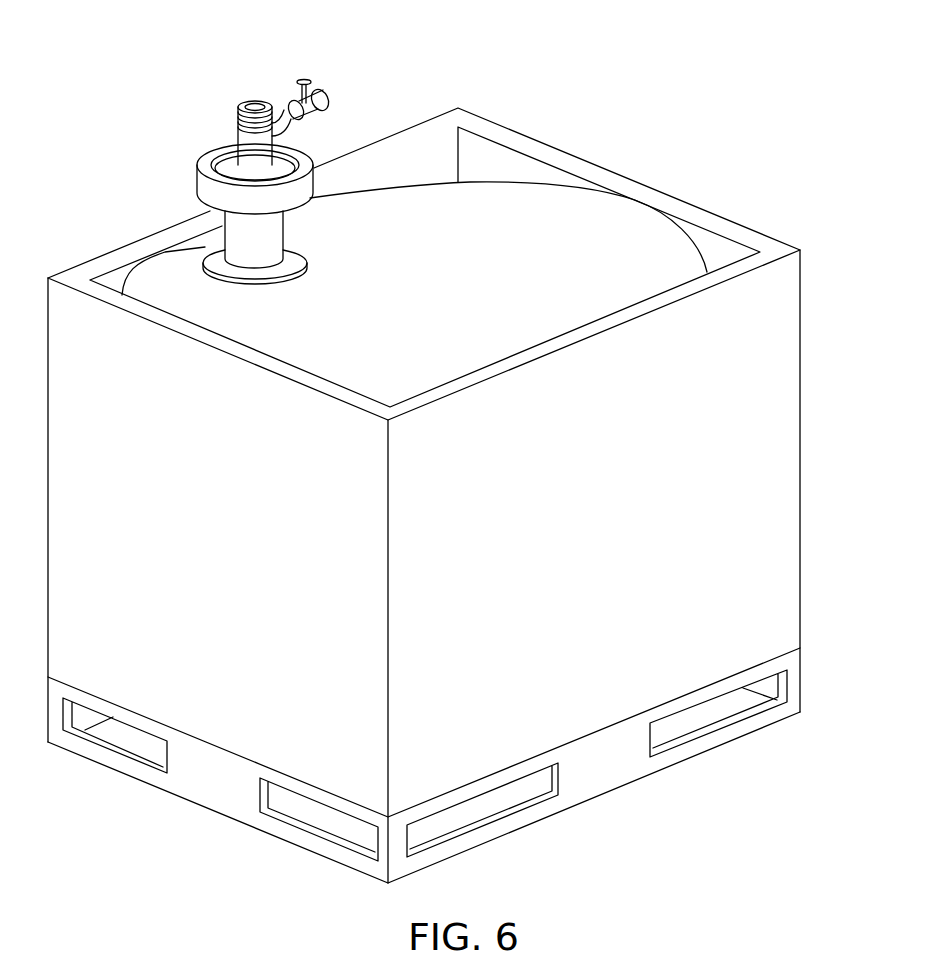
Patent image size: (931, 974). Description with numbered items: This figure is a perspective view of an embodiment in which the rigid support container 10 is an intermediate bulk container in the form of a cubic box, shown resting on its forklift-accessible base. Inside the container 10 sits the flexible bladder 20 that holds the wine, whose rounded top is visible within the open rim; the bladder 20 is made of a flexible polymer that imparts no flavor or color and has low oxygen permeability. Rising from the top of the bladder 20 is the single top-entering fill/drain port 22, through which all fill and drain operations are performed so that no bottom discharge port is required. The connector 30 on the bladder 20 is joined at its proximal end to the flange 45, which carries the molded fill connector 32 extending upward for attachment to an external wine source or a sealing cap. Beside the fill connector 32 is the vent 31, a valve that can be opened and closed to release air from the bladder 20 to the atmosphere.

The rigid container 10 is at (802, 422).
The bladder 20 is at (528, 182).
The fill/drain port 22 is at (218, 248).
The connector 30 is at (242, 254).
The vent 31 is at (307, 78).
The fill connector 32 is at (238, 128).
The flange 45 is at (227, 167).